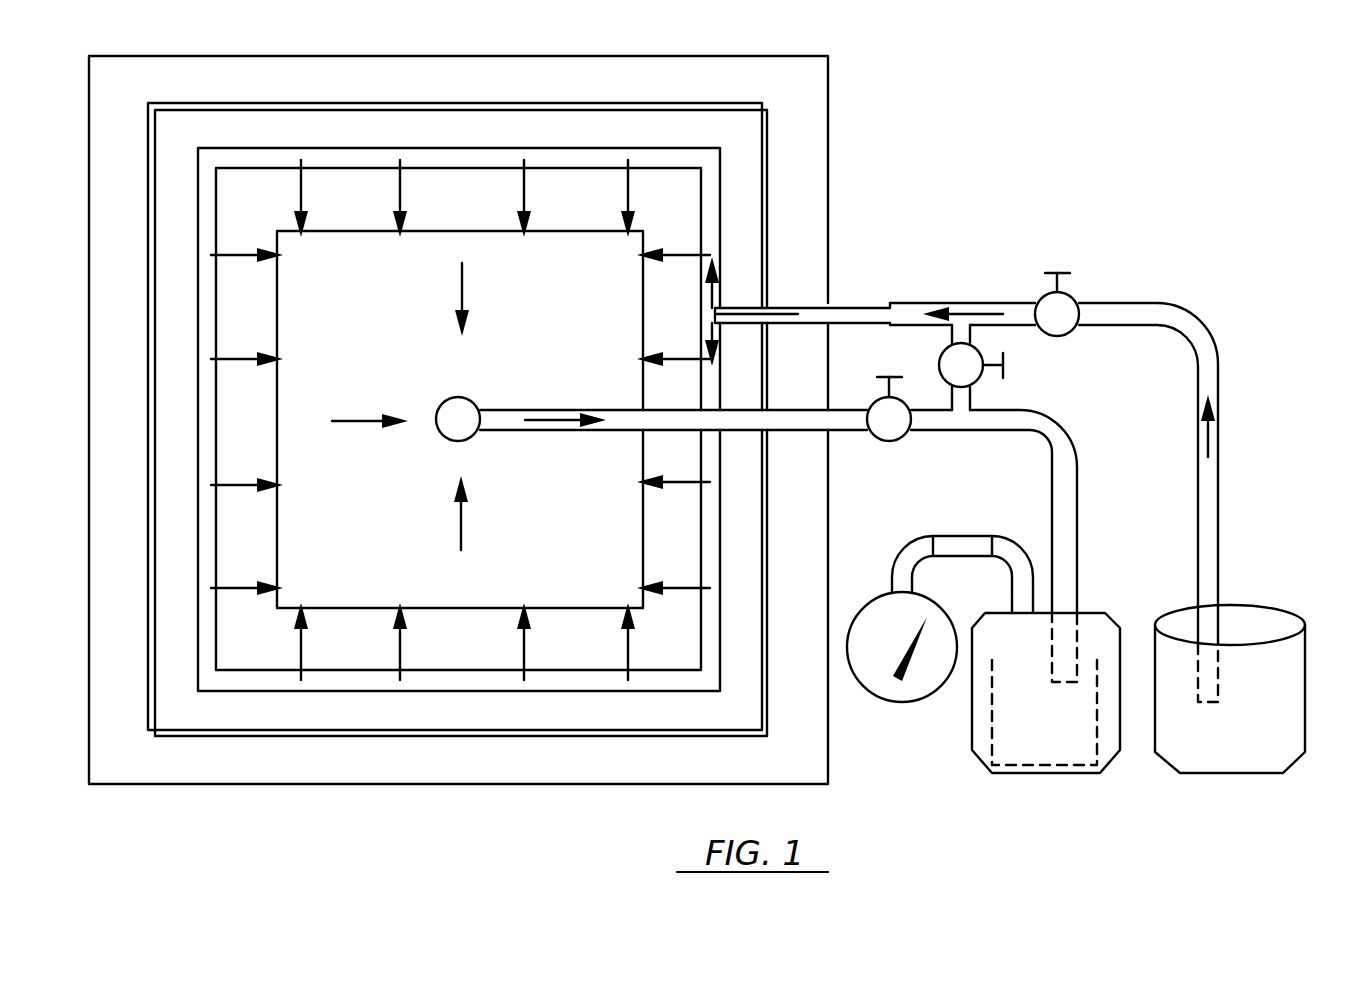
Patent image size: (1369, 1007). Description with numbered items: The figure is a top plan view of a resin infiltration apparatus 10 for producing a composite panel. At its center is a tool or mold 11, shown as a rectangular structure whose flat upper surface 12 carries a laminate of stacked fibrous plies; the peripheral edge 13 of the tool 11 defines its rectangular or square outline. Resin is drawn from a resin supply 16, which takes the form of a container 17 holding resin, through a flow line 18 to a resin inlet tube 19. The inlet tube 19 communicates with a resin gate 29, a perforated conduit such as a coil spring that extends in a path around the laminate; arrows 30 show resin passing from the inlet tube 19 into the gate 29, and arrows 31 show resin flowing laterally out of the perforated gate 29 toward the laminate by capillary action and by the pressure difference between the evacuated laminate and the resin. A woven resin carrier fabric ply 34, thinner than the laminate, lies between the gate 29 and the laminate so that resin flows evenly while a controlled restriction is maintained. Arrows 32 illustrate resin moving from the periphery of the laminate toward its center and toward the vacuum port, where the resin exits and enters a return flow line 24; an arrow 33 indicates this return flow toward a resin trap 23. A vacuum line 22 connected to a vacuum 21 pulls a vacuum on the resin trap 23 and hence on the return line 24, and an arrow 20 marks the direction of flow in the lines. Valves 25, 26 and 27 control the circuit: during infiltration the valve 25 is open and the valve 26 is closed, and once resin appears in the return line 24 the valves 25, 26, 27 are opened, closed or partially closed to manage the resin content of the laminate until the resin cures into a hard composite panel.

The resin infiltration apparatus 10 is at (948, 188).
The tool/mold 11 is at (517, 787).
The upper surface 12 is at (796, 182).
The peripheral edge 13 is at (407, 792).
The resin supply 16 is at (1248, 744).
The container 17 is at (1306, 648).
The flow line 18 is at (1219, 573).
The resin inlet tube 19 is at (848, 308).
The arrow 20 is at (963, 312).
The vacuum 21 is at (900, 702).
The vacuum line 22 is at (947, 536).
The resin trap 23 is at (1060, 739).
The return flow line 24 is at (845, 432).
The valve 25 is at (1072, 300).
The valve 26 is at (985, 353).
The valve 27 is at (905, 438).
The resin gate 29 is at (470, 431).
The arrows 30 is at (734, 308).
The arrows 31 is at (302, 204).
The arrows 32 is at (463, 300).
The arrow 33 is at (548, 431).
The fabric ply 34 is at (327, 736).